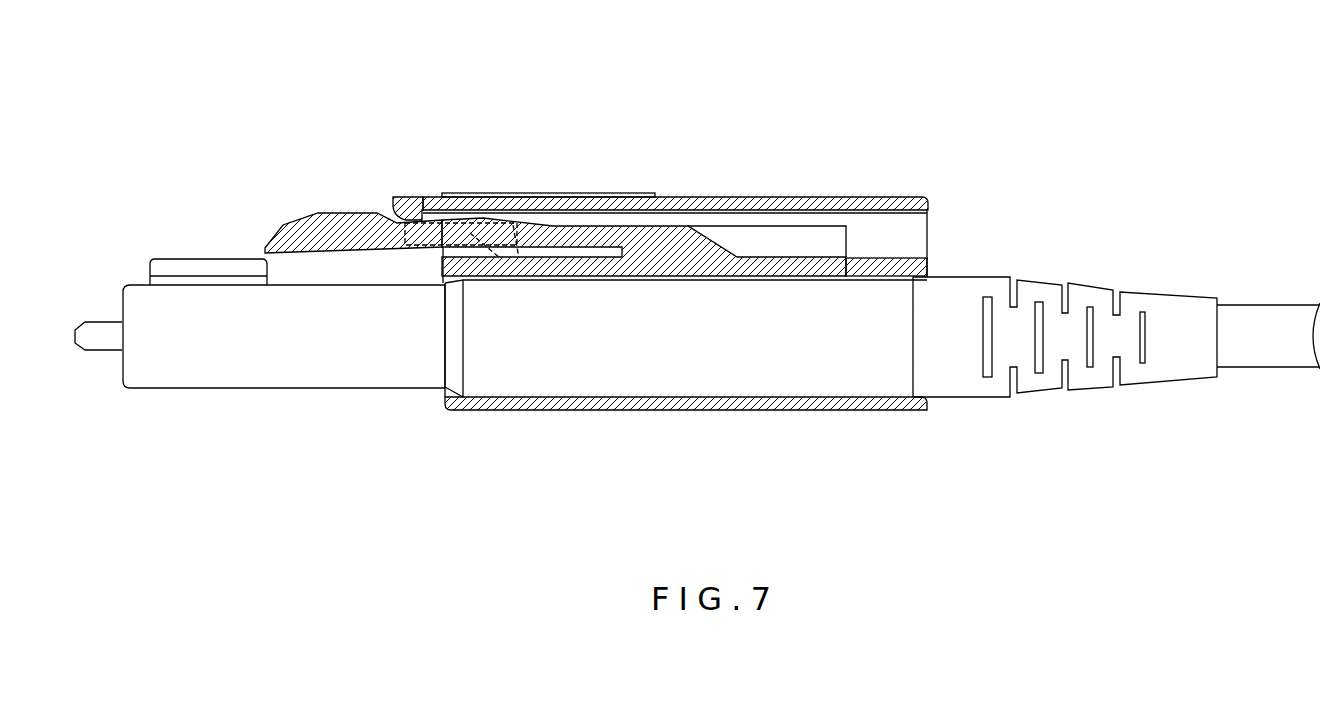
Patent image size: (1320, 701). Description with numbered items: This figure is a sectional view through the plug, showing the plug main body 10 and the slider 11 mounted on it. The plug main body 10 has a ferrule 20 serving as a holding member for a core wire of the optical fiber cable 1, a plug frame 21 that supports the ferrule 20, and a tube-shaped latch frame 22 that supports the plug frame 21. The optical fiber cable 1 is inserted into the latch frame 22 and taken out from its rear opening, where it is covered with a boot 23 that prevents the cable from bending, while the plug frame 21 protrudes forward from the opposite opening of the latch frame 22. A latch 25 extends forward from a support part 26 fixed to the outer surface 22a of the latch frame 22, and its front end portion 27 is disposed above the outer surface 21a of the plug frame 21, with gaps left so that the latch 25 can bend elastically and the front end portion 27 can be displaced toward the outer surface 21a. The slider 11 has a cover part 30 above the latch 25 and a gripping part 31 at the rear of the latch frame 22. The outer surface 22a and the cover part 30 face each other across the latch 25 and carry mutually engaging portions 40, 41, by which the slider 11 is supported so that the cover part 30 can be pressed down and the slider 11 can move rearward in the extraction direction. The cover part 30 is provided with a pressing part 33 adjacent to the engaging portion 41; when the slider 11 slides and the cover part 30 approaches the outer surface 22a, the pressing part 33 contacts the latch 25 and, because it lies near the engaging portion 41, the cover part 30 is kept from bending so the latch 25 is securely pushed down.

The optical fiber cable 1 is at (1297, 305).
The plug main body 10 is at (635, 412).
The slider 11 is at (792, 197).
The ferrule 20 is at (105, 352).
The plug frame 21 is at (207, 378).
The outer surface of the plug frame 21a is at (307, 283).
The latch frame 22 is at (510, 403).
The outer surface of the latch frame 22a is at (545, 217).
The boot 23 is at (1092, 293).
The latch 25 is at (363, 212).
The support part 26 is at (703, 243).
The front end portion 27 is at (343, 213).
The cover part 30 is at (643, 205).
The gripping part 31 is at (905, 197).
The pressing part 33 is at (394, 210).
The engaging portion of the latch frame 40 is at (487, 217).
The engaging portion of the cover part 41 is at (403, 237).